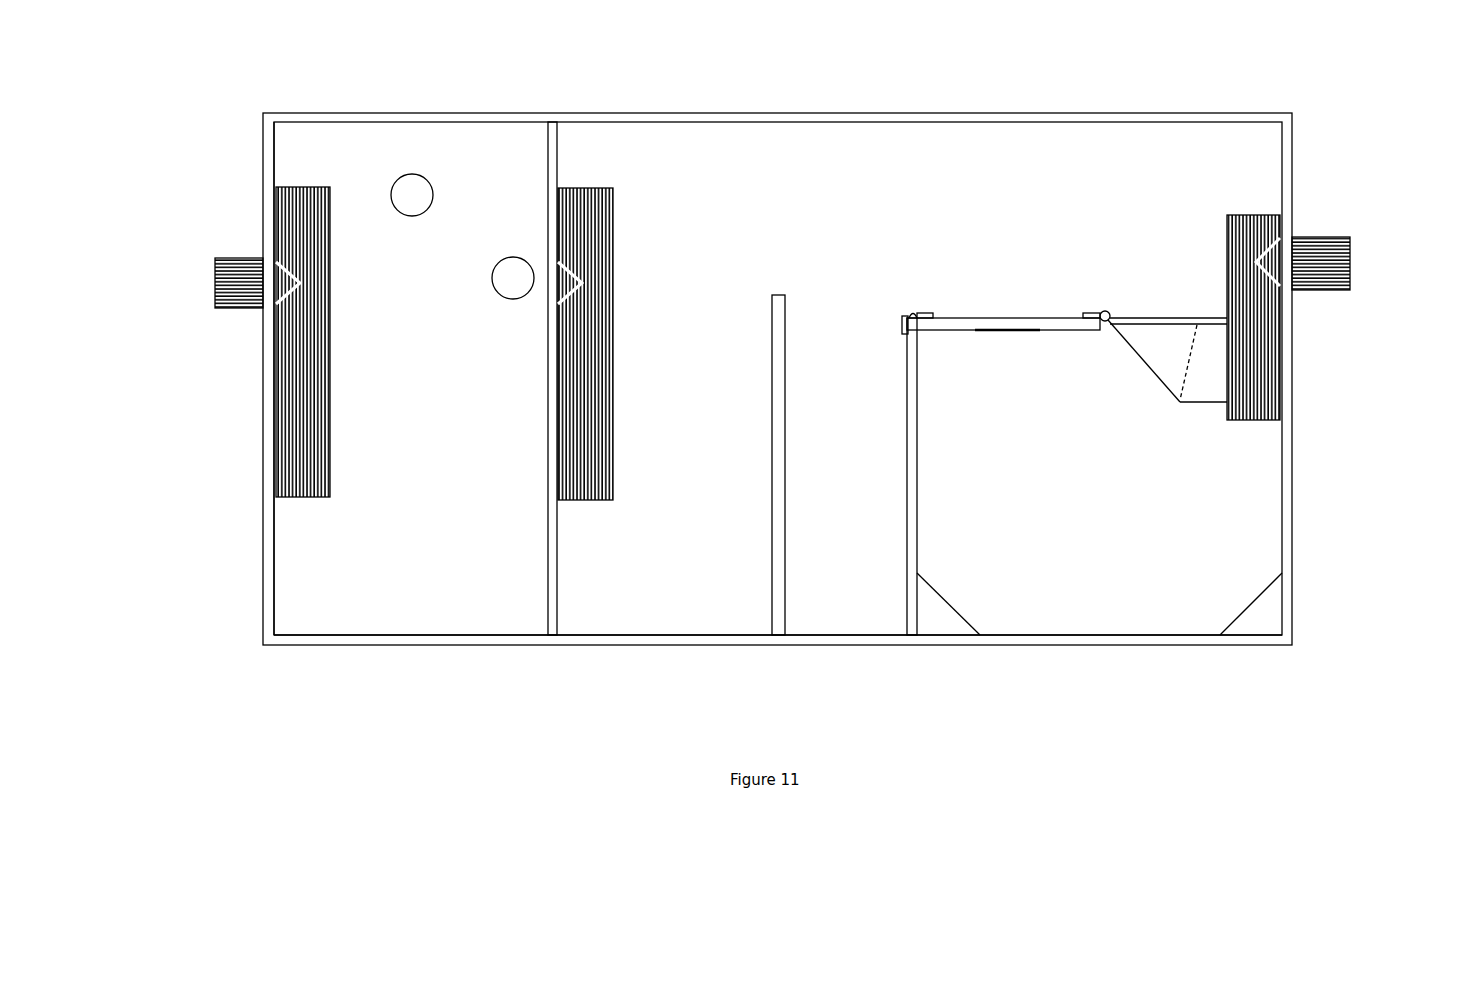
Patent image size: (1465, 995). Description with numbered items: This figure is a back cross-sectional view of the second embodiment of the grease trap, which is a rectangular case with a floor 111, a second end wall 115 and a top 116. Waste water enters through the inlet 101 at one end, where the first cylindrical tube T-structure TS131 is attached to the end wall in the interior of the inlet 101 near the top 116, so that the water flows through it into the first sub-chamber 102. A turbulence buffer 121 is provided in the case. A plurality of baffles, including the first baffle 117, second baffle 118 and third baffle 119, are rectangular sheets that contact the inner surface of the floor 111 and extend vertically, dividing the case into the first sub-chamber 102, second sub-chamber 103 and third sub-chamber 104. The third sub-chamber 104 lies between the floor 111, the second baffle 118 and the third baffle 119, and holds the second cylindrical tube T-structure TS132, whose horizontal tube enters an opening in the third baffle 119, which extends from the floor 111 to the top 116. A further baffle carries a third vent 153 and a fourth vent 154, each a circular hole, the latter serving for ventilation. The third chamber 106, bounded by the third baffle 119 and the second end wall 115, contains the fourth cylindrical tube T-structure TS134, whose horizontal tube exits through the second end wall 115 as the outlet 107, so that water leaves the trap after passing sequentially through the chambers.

The inlet 101 is at (1325, 258).
The first sub-chamber 102 is at (1145, 617).
The second sub-chamber 103 is at (820, 600).
The third sub-chamber 104 is at (625, 590).
The third chamber 106 is at (440, 600).
The outlet 107 is at (225, 272).
The floor 111 is at (345, 640).
The second end wall 115 is at (270, 490).
The top 116 is at (297, 120).
The first baffle 117 is at (912, 490).
The second baffle 118 is at (780, 305).
The third baffle 119 is at (552, 143).
The turbulence buffer 121 is at (1173, 312).
The third vent 153 is at (512, 275).
The fourth vent 154 is at (410, 190).
The first cylindrical tube T-structure TS131 is at (1225, 250).
The second cylindrical tube T-structure TS132 is at (620, 205).
The fourth cylindrical tube T-structure TS134 is at (337, 435).